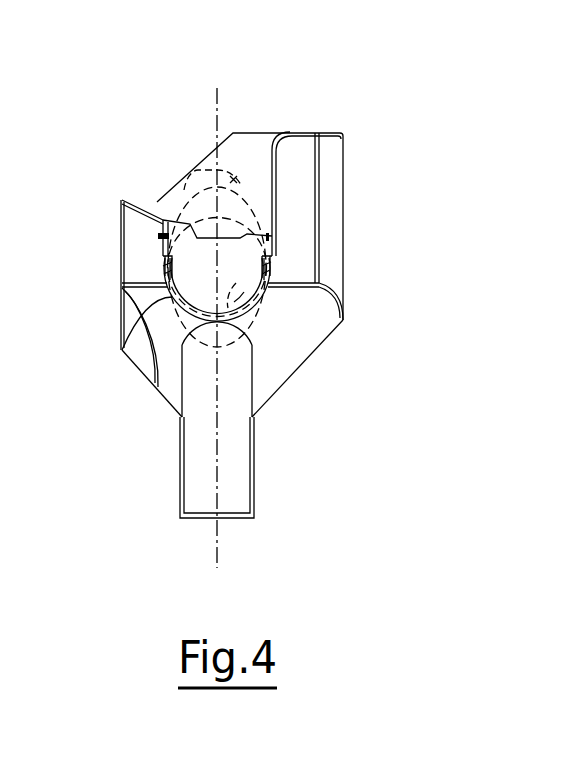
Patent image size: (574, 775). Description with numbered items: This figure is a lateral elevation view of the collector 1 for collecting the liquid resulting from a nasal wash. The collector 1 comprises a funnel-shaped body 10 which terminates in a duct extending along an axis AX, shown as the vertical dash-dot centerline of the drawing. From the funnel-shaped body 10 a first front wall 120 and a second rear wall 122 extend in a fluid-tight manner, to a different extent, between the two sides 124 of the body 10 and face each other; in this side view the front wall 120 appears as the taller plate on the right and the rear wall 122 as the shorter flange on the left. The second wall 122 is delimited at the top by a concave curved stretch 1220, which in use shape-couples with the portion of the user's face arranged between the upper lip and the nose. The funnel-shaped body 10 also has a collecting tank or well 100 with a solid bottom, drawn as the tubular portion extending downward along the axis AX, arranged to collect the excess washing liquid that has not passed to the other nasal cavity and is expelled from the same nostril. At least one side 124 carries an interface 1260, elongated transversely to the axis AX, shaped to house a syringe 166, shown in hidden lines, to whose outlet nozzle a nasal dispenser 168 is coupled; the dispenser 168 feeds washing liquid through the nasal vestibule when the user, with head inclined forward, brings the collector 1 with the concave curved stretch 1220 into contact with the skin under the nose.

The collector 1 is at (363, 70).
The funnel-shaped body 10 is at (292, 325).
The collecting tank/well 100 is at (235, 460).
The first front wall 120 is at (328, 198).
The second rear wall 122 is at (143, 242).
The sides 124 is at (278, 265).
The syringe 166 is at (251, 330).
The nasal dispenser 168 is at (247, 166).
The concave curved stretch 1220 is at (108, 181).
The interface 1260 is at (122, 350).
The axis AX is at (217, 106).